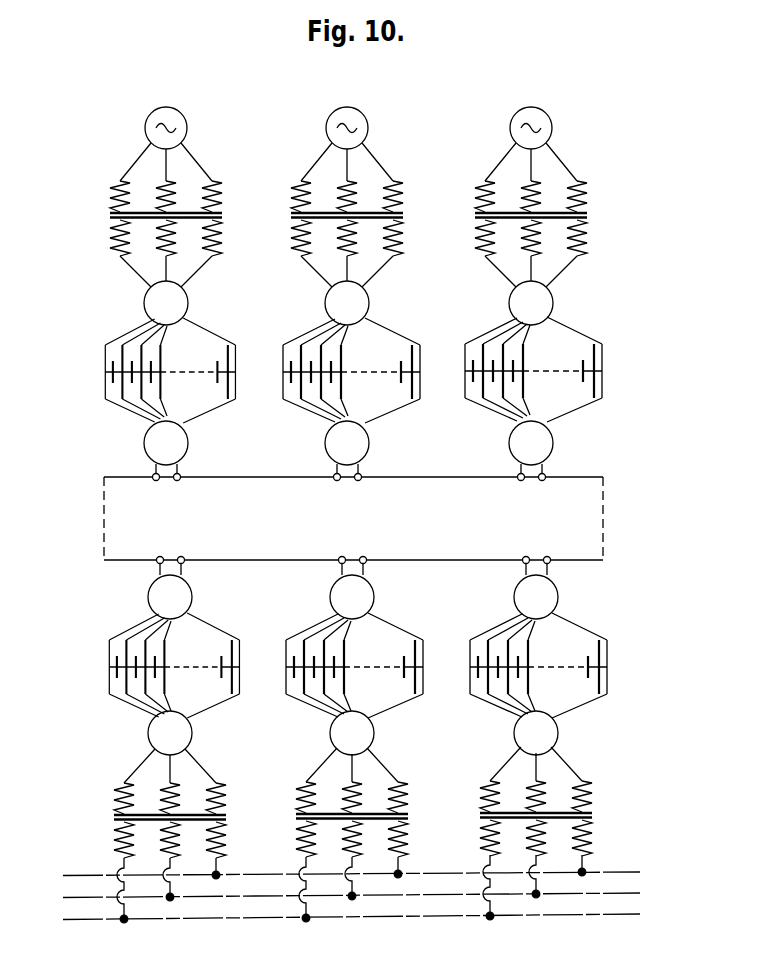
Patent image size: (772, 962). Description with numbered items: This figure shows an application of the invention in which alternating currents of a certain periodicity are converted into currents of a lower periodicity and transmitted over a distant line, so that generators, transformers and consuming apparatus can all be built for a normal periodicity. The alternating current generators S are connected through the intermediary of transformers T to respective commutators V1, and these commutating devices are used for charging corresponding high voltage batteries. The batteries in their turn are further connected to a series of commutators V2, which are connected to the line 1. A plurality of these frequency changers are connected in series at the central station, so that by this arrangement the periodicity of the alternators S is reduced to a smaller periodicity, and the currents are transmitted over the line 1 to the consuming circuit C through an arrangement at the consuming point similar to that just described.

The alternating current generator S is at (326, 123).
The transformer T is at (351, 519).
The commutator V1 is at (188, 303).
The commutator V2 is at (325, 455).
The line 1 is at (353, 519).
The consuming circuit C is at (351, 910).